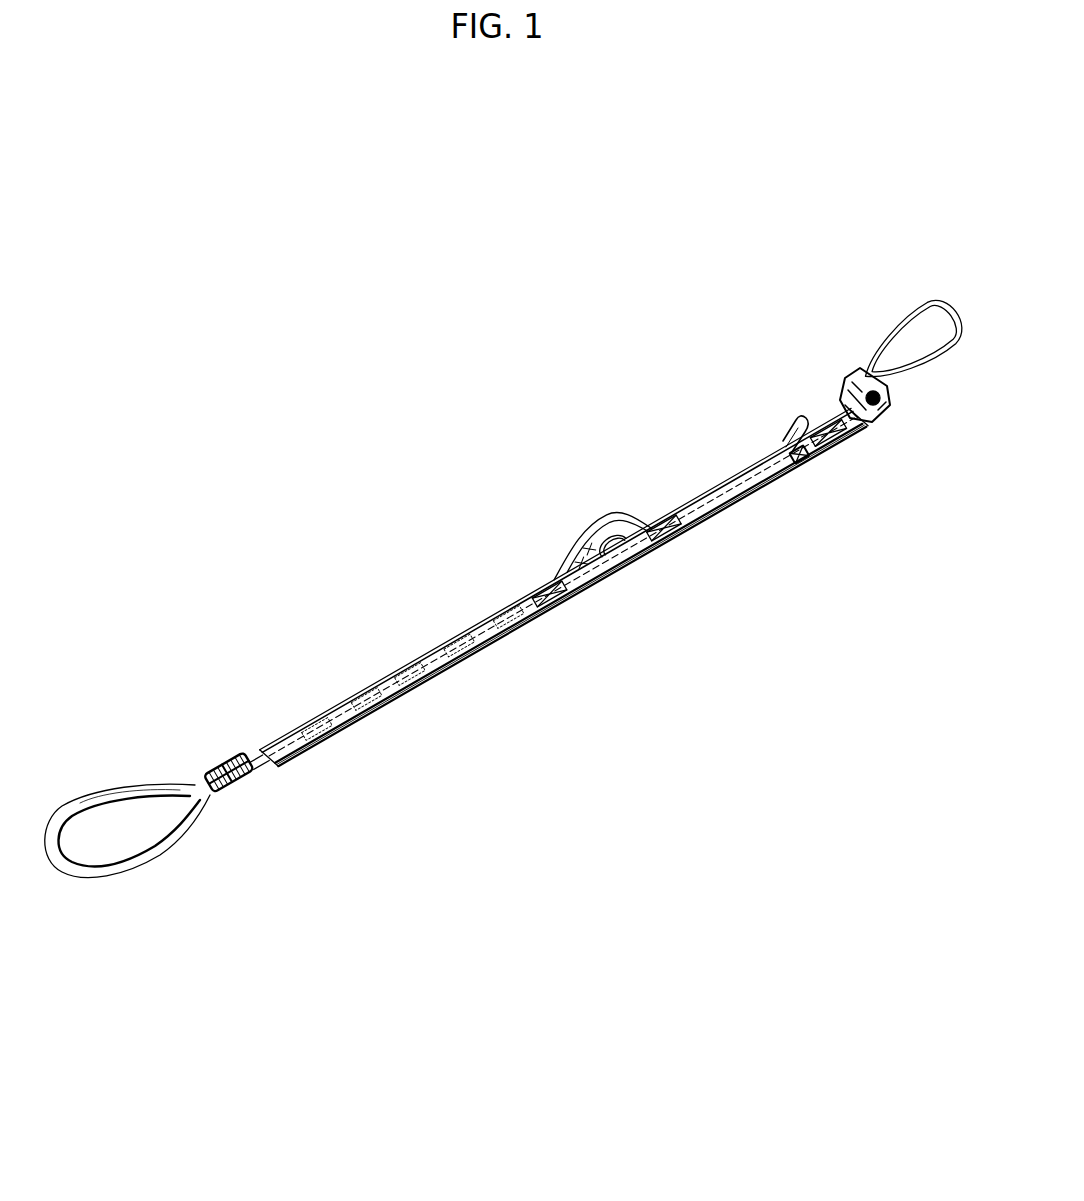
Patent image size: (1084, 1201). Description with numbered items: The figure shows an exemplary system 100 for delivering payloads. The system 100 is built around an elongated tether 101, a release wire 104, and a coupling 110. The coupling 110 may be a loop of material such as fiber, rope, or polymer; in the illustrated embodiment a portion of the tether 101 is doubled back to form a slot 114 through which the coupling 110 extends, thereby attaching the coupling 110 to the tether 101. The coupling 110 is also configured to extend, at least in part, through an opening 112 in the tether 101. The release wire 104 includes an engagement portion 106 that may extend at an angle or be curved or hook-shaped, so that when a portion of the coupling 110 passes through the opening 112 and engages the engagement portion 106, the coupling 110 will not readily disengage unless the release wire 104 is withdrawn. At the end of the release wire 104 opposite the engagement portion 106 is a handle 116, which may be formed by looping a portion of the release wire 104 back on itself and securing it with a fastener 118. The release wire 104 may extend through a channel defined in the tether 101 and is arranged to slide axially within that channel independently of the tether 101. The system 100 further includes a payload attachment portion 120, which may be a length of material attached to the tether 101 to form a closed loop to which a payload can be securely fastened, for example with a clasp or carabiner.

The system 100 is at (437, 470).
The tether 101 is at (298, 770).
The release wire 104 is at (610, 577).
The engagement portion 106 is at (783, 437).
The coupling 110 is at (903, 318).
The opening 112 is at (802, 467).
The slot 114 is at (877, 417).
The handle 116 is at (112, 880).
The fastener 118 is at (226, 752).
The payload attachment portion 120 is at (592, 520).